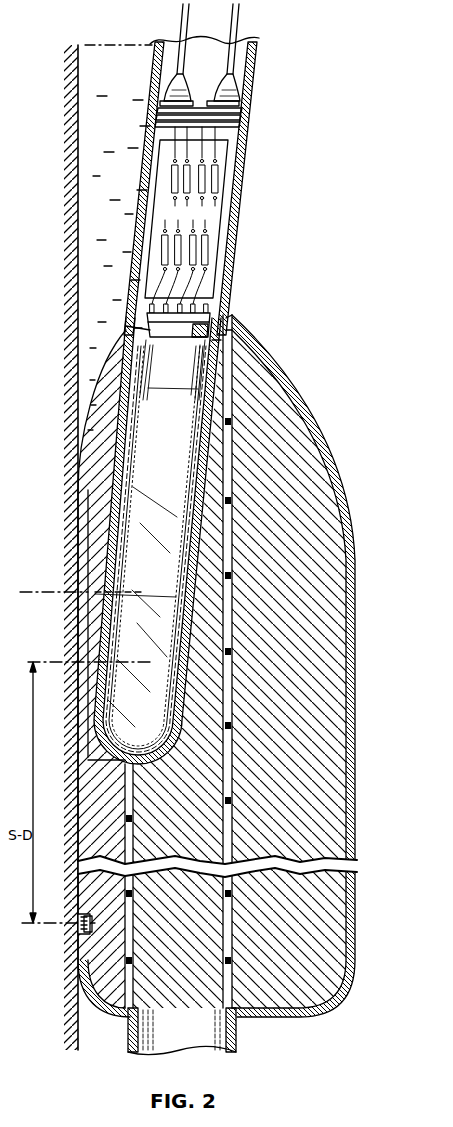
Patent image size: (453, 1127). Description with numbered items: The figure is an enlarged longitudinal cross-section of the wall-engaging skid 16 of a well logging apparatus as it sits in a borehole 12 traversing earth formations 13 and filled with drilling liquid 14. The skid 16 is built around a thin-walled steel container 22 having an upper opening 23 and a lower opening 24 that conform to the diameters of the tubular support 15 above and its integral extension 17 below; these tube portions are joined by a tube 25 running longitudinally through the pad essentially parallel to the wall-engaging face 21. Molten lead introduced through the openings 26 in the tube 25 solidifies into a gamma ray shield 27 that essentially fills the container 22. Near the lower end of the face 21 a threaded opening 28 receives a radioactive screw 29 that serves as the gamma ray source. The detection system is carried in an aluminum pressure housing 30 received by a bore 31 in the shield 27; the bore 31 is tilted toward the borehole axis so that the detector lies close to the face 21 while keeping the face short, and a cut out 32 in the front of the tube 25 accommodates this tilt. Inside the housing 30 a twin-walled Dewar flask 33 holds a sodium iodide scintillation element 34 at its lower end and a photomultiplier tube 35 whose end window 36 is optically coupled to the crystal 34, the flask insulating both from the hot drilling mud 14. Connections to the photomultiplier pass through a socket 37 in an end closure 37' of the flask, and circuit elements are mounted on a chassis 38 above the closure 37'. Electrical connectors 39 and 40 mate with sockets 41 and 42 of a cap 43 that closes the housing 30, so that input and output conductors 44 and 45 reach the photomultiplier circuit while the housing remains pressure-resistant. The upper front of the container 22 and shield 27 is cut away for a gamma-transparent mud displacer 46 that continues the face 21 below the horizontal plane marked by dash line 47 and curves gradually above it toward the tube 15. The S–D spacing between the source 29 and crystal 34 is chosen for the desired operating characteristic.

The borehole 12 is at (78, 98).
The earth formations 13 is at (53, 547).
The drilling liquid 14 is at (116, 148).
The tubular support 15 is at (250, 140).
The wall-engaging skid 16 is at (341, 454).
The integral extension of tube 17 is at (132, 1030).
The wall-engaging face 21 is at (78, 768).
The container 22 is at (357, 657).
The upper opening 23 is at (229, 314).
The lower opening 24 is at (238, 1026).
The tube 25 is at (233, 748).
The spacers 26 is at (229, 556).
The gamma ray shield 27 is at (288, 832).
The threaded opening 28 is at (80, 928).
The screw 29 is at (81, 916).
The pressure housing 30 is at (226, 260).
The bore 31 is at (133, 382).
The cut out 32 is at (130, 777).
The Dewar flask 33 is at (208, 353).
The scintillation element 34 is at (168, 705).
The photomultiplier tube 35 is at (160, 569).
The end window 36 is at (176, 627).
The socket 37 is at (147, 325).
The end closure 37' is at (119, 314).
The chassis 38 is at (213, 222).
The electrical connector 39 is at (166, 88).
The electrical connector 40 is at (241, 88).
The socket 41 is at (160, 95).
The socket 42 is at (240, 93).
The cap 43 is at (233, 111).
The electrical conductor 44 is at (186, 38).
The electrical conductor 45 is at (232, 38).
The mud displacer 46 is at (88, 463).
The dash line 47 is at (78, 592).